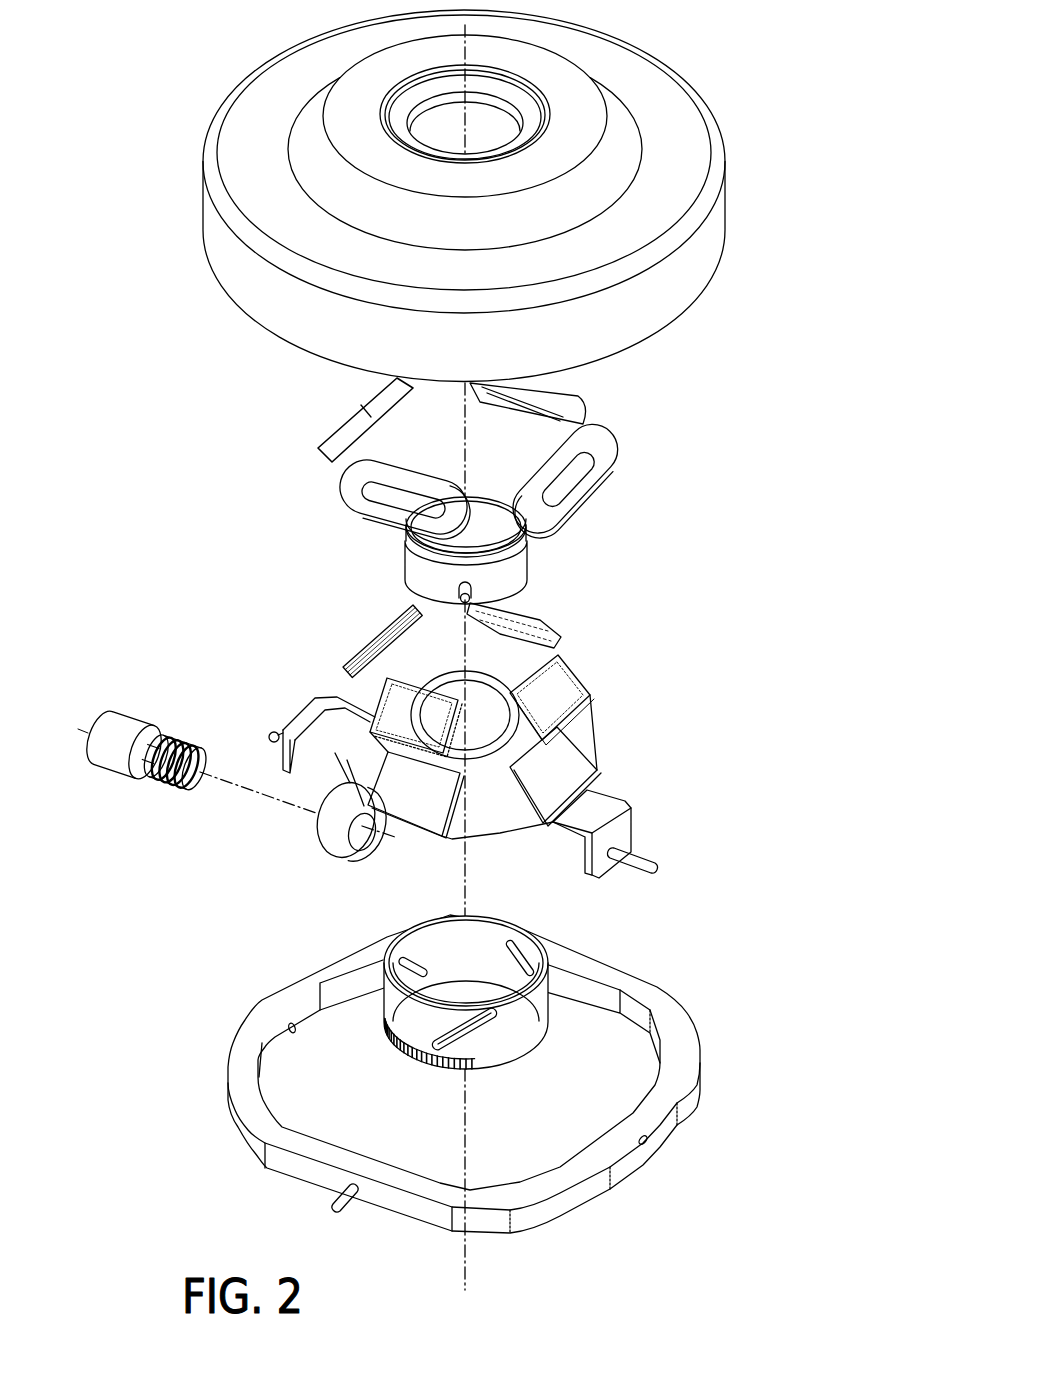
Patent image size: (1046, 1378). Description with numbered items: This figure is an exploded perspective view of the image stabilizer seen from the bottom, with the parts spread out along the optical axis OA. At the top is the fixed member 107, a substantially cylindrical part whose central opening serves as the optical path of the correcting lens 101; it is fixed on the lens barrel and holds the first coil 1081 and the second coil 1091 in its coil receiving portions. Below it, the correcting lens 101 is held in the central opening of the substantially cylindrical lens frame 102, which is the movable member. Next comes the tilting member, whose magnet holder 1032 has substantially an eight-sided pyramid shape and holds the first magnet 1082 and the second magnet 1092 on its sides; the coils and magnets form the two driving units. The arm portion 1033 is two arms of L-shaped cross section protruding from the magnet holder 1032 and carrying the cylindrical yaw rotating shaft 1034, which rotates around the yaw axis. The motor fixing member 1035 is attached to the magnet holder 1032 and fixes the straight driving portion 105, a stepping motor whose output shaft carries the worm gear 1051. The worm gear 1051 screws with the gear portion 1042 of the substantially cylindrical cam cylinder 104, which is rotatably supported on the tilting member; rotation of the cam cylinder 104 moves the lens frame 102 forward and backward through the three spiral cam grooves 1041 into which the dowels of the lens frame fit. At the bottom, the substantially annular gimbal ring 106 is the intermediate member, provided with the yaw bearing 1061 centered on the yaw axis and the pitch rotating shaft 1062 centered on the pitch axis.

The fixed member 107 is at (705, 255).
The first coil 1081 is at (367, 407).
The second coil 1091 is at (577, 393).
The correcting lens 101 is at (507, 532).
The lens frame 102 is at (412, 565).
The first magnet 1082 is at (376, 645).
The second magnet 1092 is at (527, 607).
The magnet holder 1032 is at (487, 822).
The arm portion 1033 is at (617, 810).
The yaw rotating shaft 1034 is at (655, 865).
The motor fixing member 1035 is at (328, 838).
The straight driving portion 105 is at (117, 761).
The worm gear 1051 is at (170, 787).
The optical axis OA is at (463, 886).
The gimbal ring 106 is at (657, 988).
The yaw bearing 1061 is at (290, 1025).
The pitch rotating shaft 1062 is at (338, 1203).
The cam cylinder 104 is at (537, 1023).
The cam groove 1041 is at (483, 1032).
The gear portion 1042 is at (413, 1058).